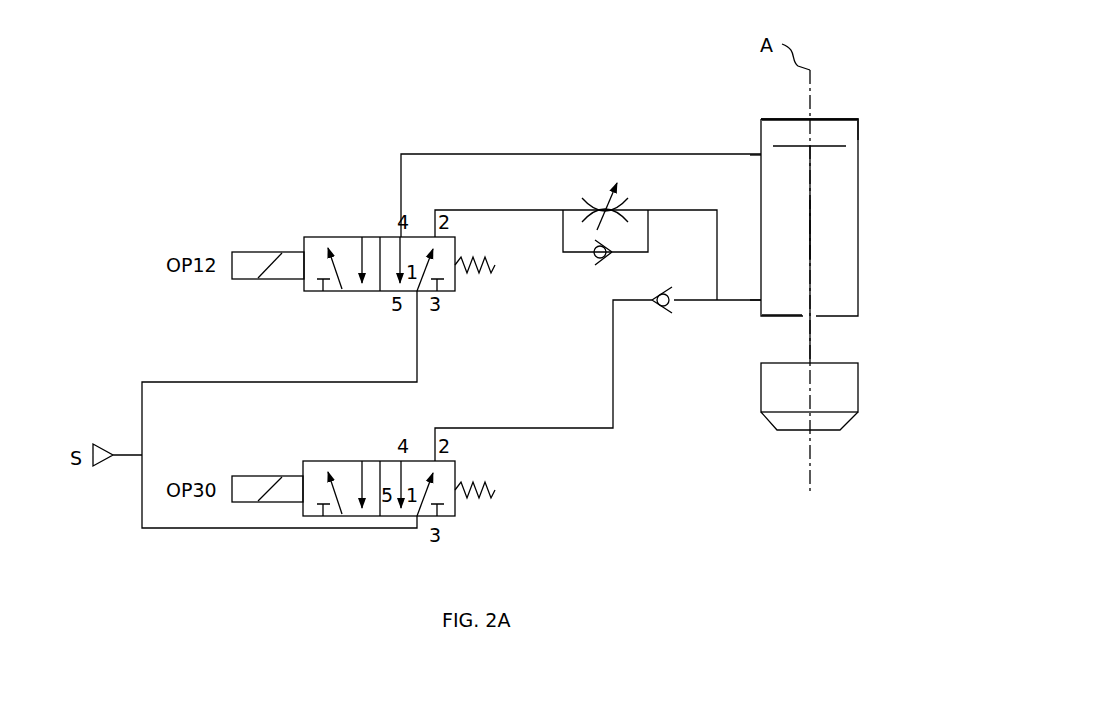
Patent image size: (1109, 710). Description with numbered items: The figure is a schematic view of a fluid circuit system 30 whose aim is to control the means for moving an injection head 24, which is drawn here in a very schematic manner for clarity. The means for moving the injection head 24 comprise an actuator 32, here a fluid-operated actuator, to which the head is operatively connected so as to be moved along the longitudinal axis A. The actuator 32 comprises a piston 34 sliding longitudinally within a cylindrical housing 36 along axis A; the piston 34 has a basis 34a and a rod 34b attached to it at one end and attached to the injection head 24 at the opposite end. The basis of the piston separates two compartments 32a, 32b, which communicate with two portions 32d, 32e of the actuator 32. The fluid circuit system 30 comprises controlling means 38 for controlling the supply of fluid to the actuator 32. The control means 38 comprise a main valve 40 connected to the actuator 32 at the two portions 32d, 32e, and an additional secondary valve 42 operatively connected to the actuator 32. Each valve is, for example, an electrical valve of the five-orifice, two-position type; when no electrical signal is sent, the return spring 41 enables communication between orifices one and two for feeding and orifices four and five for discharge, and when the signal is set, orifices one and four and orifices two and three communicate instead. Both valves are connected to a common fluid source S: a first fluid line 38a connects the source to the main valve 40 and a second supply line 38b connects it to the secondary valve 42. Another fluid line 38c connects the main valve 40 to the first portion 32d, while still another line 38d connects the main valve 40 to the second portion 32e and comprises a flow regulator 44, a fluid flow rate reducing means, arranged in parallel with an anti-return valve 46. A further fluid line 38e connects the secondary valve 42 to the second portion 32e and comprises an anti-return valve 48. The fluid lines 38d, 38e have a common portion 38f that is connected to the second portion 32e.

The fluid circuit system 30 is at (306, 70).
The controlling means 38 is at (308, 173).
The first fluid line 38a is at (200, 382).
The second supply line 38b is at (200, 530).
The fluid line 38c is at (566, 154).
The fluid line 38d is at (494, 210).
The fluid line 38e is at (583, 430).
The common portion 38f is at (733, 302).
The main valve 40 is at (328, 314).
The return spring 41 is at (472, 298).
The secondary valve 42 is at (471, 537).
The flow regulator 44 is at (599, 191).
The anti-return valve 46 is at (597, 283).
The anti-return valve 48 is at (657, 317).
The injection head 24 is at (876, 388).
The actuator 32 is at (878, 164).
The compartment 32a is at (792, 133).
The compartment 32b is at (848, 282).
The first portion 32d is at (755, 153).
The second portion 32e is at (755, 303).
The piston 34 is at (817, 253).
The basis 34a is at (822, 146).
The rod 34b is at (858, 205).
The cylindrical housing 36 is at (858, 128).